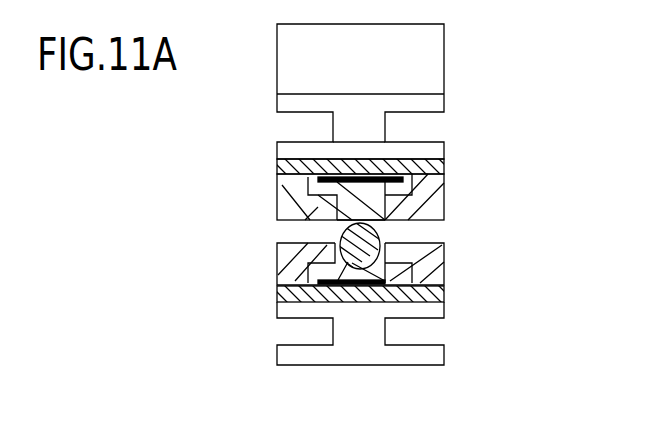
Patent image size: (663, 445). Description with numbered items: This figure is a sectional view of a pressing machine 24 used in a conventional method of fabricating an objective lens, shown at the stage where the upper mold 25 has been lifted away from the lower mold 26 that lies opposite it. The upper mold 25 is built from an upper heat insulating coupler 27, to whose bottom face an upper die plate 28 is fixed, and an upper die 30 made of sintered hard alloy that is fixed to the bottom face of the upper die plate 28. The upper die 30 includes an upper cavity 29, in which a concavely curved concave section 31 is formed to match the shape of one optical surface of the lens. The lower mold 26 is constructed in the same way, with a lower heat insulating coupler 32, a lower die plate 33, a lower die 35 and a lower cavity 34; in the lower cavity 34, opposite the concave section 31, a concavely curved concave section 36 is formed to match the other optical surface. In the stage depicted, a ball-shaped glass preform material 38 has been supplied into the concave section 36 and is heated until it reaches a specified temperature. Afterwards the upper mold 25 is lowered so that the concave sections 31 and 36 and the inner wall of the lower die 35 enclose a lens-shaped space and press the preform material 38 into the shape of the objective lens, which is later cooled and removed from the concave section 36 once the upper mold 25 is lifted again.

The pressing machine 24 is at (461, 44).
The upper mold 25 is at (451, 193).
The lower mold 26 is at (451, 244).
The upper heat insulating coupler 27 is at (380, 123).
The upper die plate 28 is at (444, 161).
The upper cavity 29 is at (325, 181).
The upper die 30 is at (292, 206).
The concave section 31 is at (338, 233).
The lower heat insulating coupler 32 is at (377, 347).
The lower die plate 33 is at (432, 293).
The lower cavity 34 is at (352, 285).
The lower die 35 is at (437, 268).
The concave section 36 is at (325, 259).
The ball-shaped glass preform material 38 is at (378, 232).